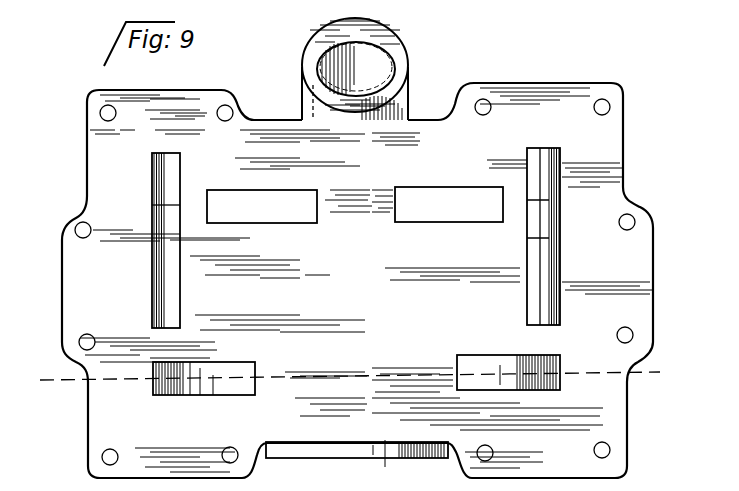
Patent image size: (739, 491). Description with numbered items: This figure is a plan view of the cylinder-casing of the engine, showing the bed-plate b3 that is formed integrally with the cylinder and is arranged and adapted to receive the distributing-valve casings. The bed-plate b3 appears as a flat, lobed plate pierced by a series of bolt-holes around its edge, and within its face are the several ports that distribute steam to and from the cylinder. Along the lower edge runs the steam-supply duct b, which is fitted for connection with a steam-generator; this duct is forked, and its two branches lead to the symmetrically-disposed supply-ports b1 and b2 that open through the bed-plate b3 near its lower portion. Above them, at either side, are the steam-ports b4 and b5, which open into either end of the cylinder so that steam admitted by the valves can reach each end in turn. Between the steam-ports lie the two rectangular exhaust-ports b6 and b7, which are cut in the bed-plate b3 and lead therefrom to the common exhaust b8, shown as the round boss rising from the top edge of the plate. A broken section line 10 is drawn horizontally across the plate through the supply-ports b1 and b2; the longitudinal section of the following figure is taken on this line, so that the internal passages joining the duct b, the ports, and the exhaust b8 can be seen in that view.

The steam-supply duct b is at (345, 452).
The supply-port b1 is at (467, 362).
The supply-port b2 is at (237, 372).
The bed-plate b3 is at (83, 270).
The steam-port b4 is at (166, 166).
The steam-port b5 is at (536, 163).
The exhaust-port b6 is at (266, 200).
The exhaust-port b7 is at (418, 196).
The common exhaust b8 is at (380, 72).
The section line 10 is at (350, 378).